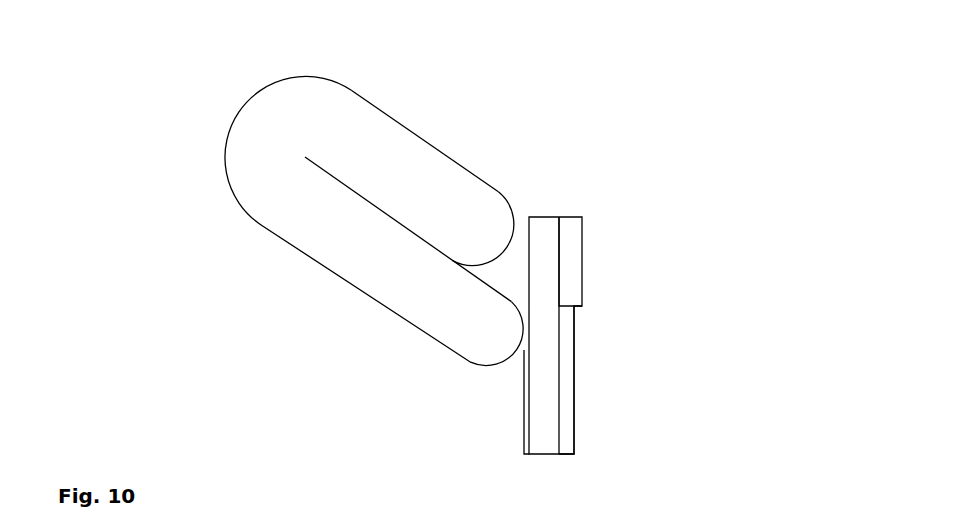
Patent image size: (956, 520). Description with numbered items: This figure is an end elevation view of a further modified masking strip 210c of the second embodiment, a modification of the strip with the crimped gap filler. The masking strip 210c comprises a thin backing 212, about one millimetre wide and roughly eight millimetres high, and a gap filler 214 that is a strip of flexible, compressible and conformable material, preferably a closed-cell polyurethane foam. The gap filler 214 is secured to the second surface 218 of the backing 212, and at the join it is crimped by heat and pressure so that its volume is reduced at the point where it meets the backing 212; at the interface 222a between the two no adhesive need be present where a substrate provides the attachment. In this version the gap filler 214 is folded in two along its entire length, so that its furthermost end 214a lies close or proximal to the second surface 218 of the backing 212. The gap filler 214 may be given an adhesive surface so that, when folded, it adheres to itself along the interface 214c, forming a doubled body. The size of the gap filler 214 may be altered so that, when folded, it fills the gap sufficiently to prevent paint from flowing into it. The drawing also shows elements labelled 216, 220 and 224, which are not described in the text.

The masking strip 210c is at (278, 326).
The backing 212 is at (544, 232).
The gap filler 214 is at (257, 195).
The furthermost end 214a is at (447, 257).
The interface 214c is at (362, 197).
The shaft 216 is at (558, 283).
The second surface 218 is at (529, 251).
The lower pin portion 220 is at (568, 403).
The interface 222a is at (528, 330).
The head 224 is at (573, 252).